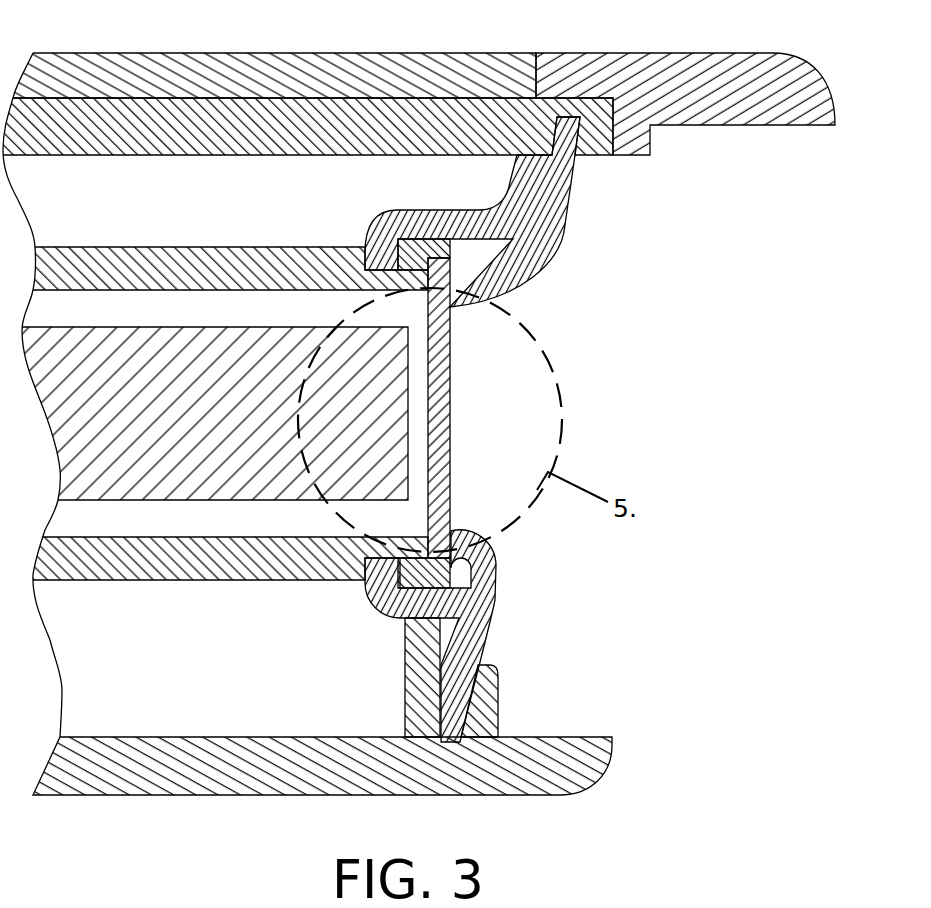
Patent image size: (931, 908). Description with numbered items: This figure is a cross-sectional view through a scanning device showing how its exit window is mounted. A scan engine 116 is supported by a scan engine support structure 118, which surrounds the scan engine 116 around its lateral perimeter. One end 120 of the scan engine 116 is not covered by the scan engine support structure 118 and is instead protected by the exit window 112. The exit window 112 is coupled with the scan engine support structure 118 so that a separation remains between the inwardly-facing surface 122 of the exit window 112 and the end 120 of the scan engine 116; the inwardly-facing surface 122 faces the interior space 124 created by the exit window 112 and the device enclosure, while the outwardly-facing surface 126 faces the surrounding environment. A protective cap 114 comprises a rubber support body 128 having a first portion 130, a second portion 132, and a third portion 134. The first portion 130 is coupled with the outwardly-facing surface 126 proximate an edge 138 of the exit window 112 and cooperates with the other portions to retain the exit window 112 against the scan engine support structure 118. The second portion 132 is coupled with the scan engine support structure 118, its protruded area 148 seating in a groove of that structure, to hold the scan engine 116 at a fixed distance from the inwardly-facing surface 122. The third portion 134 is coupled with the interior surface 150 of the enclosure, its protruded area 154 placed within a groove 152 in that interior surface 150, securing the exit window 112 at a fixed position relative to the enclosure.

The exit window 112 is at (432, 352).
The protective cap 114 is at (563, 249).
The scan engine 116 is at (216, 423).
The scan engine support structure 118 is at (226, 262).
The end of the scan engine 120 is at (409, 483).
The inwardly-facing surface 122 is at (440, 430).
The interior space 124 is at (242, 198).
The outwardly-facing surface 126 is at (450, 380).
The rubber support body 128 is at (543, 222).
The first portion 130 is at (503, 282).
The second portion 132 is at (388, 227).
The third portion 134 is at (578, 133).
The edge of the exit window 138 is at (452, 258).
The protruded area 148 is at (398, 260).
The interior surface 150 is at (358, 155).
The groove 152 is at (578, 98).
The protruded area 154 is at (560, 122).